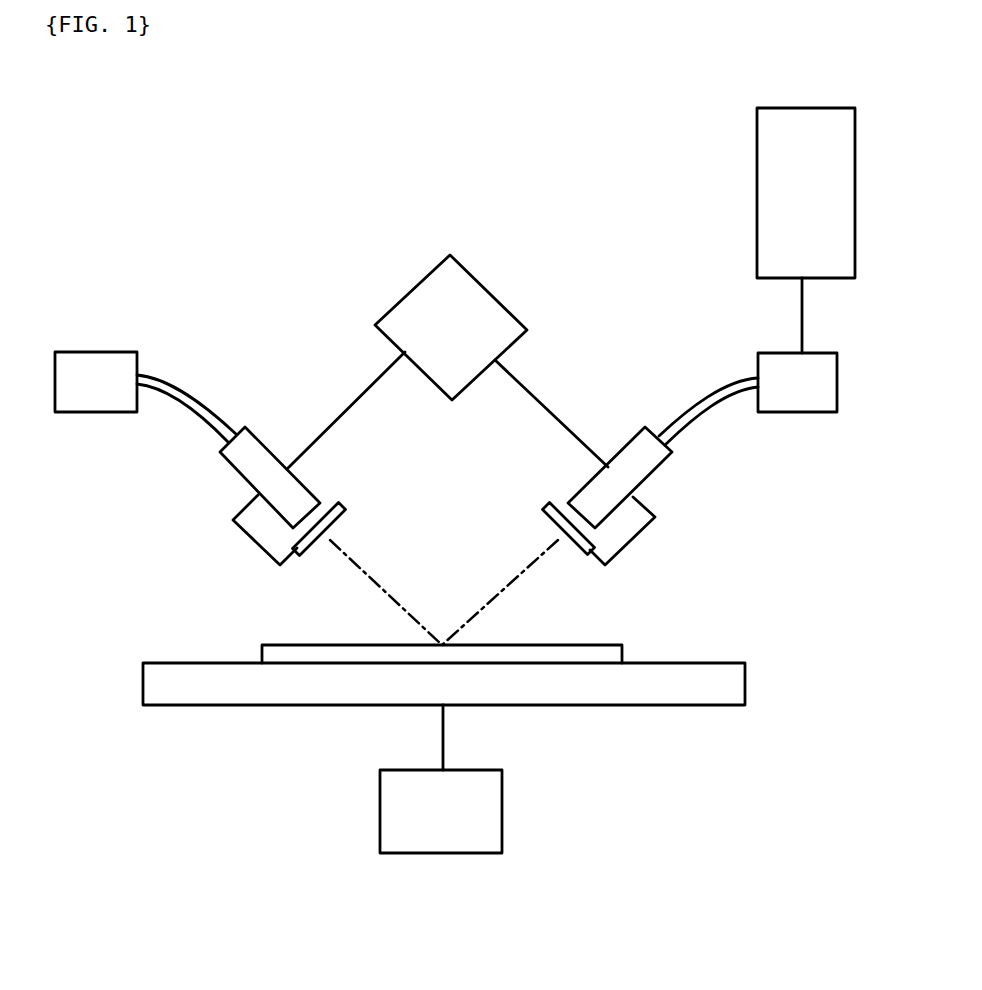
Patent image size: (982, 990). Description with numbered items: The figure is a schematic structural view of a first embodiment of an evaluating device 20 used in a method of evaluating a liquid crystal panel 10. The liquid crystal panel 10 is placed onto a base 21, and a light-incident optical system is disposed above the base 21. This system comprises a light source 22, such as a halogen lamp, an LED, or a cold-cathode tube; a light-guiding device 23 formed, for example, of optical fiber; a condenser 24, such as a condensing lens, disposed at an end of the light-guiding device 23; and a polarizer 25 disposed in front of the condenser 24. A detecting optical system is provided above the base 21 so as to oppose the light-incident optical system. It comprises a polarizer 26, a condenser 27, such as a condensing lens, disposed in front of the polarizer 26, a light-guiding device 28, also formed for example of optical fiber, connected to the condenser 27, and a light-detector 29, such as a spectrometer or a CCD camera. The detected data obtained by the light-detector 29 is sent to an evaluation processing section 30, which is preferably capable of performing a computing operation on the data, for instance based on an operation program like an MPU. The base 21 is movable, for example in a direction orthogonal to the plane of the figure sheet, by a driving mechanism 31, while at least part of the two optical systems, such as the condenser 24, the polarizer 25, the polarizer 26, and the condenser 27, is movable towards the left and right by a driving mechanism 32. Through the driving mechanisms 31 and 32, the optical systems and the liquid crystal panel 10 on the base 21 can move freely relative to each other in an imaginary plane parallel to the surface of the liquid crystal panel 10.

The liquid crystal panel 10 is at (307, 655).
The evaluating device 20 is at (305, 206).
The base 21 is at (622, 695).
The light source 22 is at (101, 366).
The light-guiding device 23 is at (190, 394).
The condenser 24 is at (248, 467).
The polarizer 25 is at (338, 508).
The polarizer 26 is at (545, 505).
The condenser 27 is at (640, 470).
The light-guiding device 28 is at (695, 397).
The light-detector 29 is at (773, 362).
The evaluation processing section 30 is at (768, 157).
The driving mechanism 31 is at (430, 838).
The driving mechanism 32 is at (428, 292).